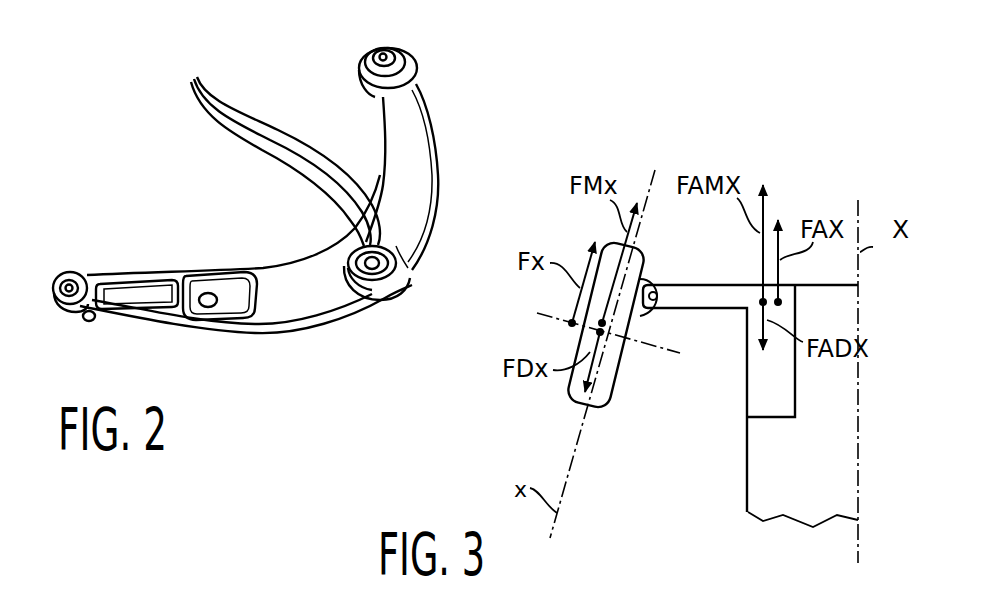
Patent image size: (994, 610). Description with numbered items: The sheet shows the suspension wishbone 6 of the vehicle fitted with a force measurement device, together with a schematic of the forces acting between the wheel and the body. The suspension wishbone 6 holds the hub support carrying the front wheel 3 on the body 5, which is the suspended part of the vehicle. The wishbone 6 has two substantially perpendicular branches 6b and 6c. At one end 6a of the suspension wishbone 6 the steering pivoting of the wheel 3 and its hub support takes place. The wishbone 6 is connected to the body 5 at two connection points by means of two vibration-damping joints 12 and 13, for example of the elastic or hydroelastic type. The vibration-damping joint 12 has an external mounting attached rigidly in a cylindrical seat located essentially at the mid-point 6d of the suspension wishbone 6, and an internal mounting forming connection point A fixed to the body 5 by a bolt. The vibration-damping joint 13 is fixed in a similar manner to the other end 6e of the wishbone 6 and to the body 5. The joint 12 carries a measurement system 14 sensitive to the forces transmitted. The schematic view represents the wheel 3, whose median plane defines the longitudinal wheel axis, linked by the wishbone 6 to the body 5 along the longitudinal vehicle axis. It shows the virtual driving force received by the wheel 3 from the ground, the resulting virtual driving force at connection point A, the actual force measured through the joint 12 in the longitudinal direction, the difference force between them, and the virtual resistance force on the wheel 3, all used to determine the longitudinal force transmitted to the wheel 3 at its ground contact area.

In FIG. 3, the front wheel 3 is at (623, 352).
In FIG. 3, the body 5 is at (747, 458).
In FIG. 2, the suspension wishbone 6 is at (283, 340).
In FIG. 3, the suspension wishbone 6 is at (703, 283).
In FIG. 2, the end of the suspension wishbone 6a is at (63, 273).
In FIG. 2, the branch of the suspension wishbone 6b is at (197, 273).
In FIG. 2, the branch of the suspension wishbone 6c is at (437, 140).
In FIG. 2, the mid-point of the suspension wishbone 6d is at (394, 308).
In FIG. 2, the other end of the suspension wishbone 6e is at (410, 50).
In FIG. 2, the vibration-damping joint 12 is at (397, 243).
In FIG. 2, the vibration-damping joint 13 is at (380, 44).
In FIG. 2, the measurement system 14 is at (318, 156).